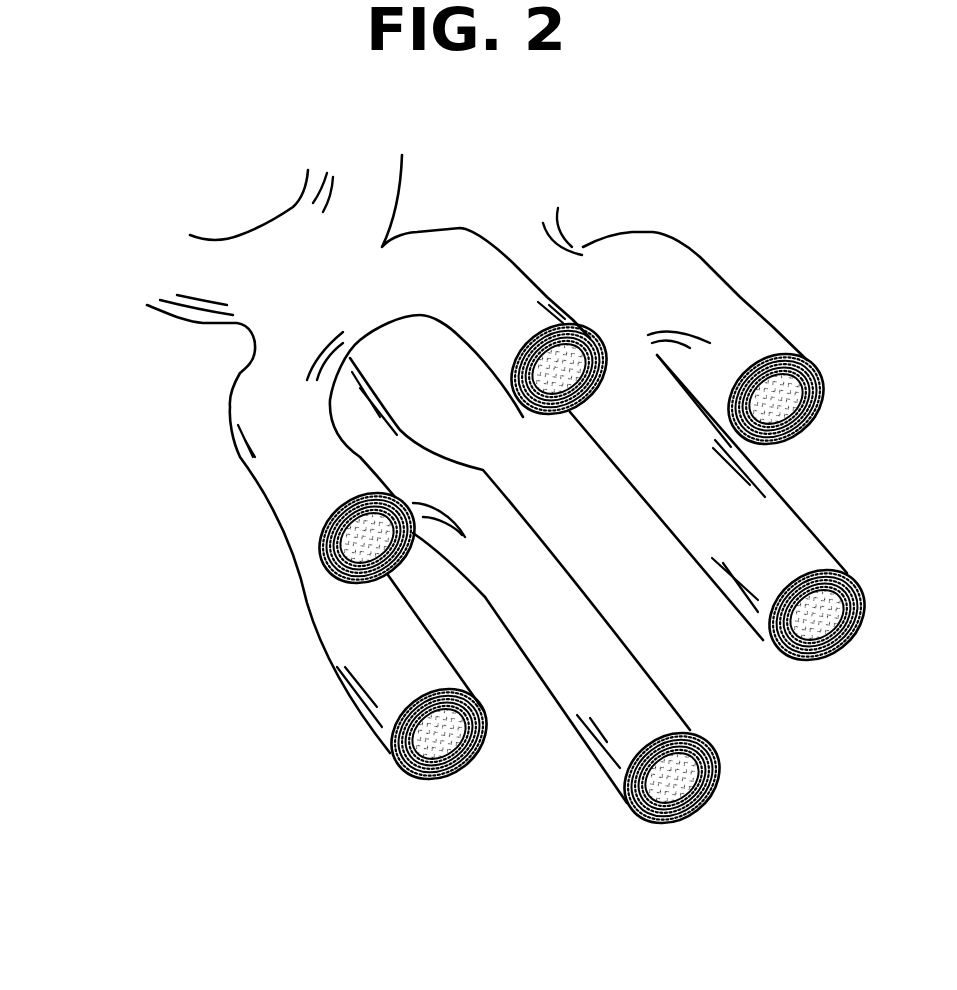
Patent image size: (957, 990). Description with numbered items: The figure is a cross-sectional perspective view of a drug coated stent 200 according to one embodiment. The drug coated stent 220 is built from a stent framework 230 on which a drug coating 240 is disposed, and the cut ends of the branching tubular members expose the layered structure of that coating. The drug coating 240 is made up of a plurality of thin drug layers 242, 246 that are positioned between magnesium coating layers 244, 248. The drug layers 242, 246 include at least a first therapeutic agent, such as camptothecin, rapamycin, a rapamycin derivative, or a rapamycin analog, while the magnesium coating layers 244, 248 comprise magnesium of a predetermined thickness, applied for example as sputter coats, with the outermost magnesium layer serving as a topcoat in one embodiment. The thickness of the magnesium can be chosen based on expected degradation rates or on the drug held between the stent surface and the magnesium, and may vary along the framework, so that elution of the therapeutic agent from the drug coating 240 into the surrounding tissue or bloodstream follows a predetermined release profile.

The cross-sectional perspective view of a drug coated stent 200 is at (80, 155).
The drug coated stent 220 is at (147, 383).
The drug coating 240 is at (292, 516).
The stent framework 230 is at (321, 559).
The drug layer 242 is at (328, 567).
The magnesium coating layer 244 is at (338, 573).
The drug layer 246 is at (346, 579).
The magnesium coating layer 248 is at (353, 586).